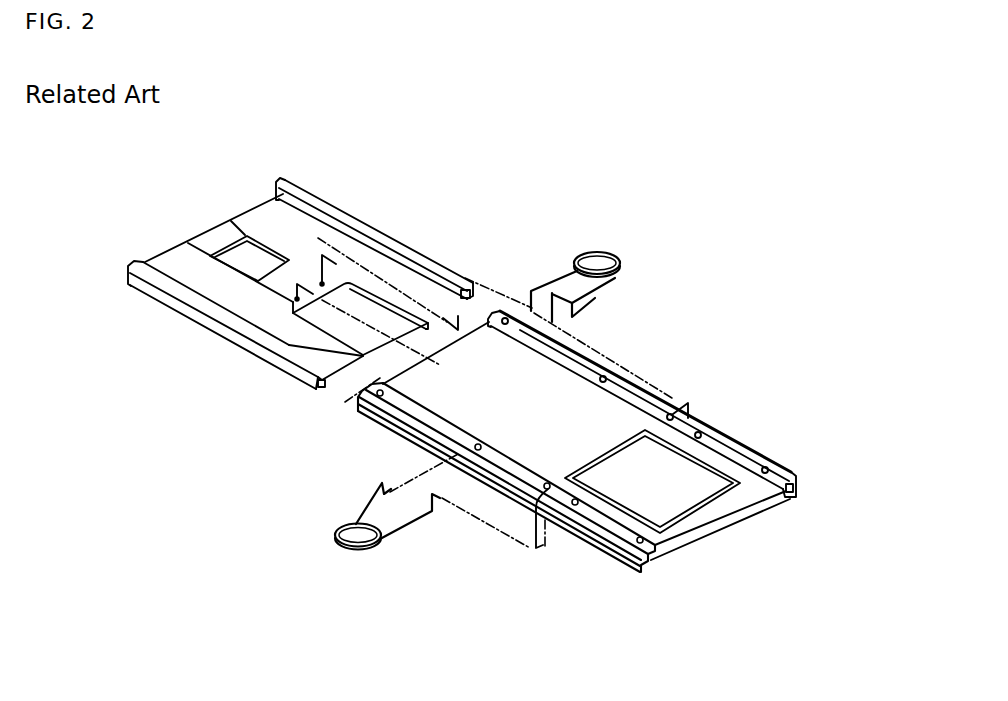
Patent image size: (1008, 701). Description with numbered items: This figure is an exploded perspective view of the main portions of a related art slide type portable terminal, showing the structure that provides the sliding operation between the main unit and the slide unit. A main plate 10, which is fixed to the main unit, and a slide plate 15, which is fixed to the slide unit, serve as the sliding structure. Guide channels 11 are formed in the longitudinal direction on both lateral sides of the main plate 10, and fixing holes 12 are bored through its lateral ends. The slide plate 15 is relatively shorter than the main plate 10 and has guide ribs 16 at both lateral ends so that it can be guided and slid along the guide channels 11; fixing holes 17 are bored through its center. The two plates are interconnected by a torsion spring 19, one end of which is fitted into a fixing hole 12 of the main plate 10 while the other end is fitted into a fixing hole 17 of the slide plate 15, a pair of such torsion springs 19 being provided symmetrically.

The main plate 10 is at (595, 443).
The guide channels 11 is at (484, 482).
The fixing holes 12 is at (671, 413).
The slide plate 15 is at (354, 203).
The guide ribs 16 is at (332, 395).
The fixing holes 17 is at (322, 279).
The torsion spring 19 is at (614, 255).